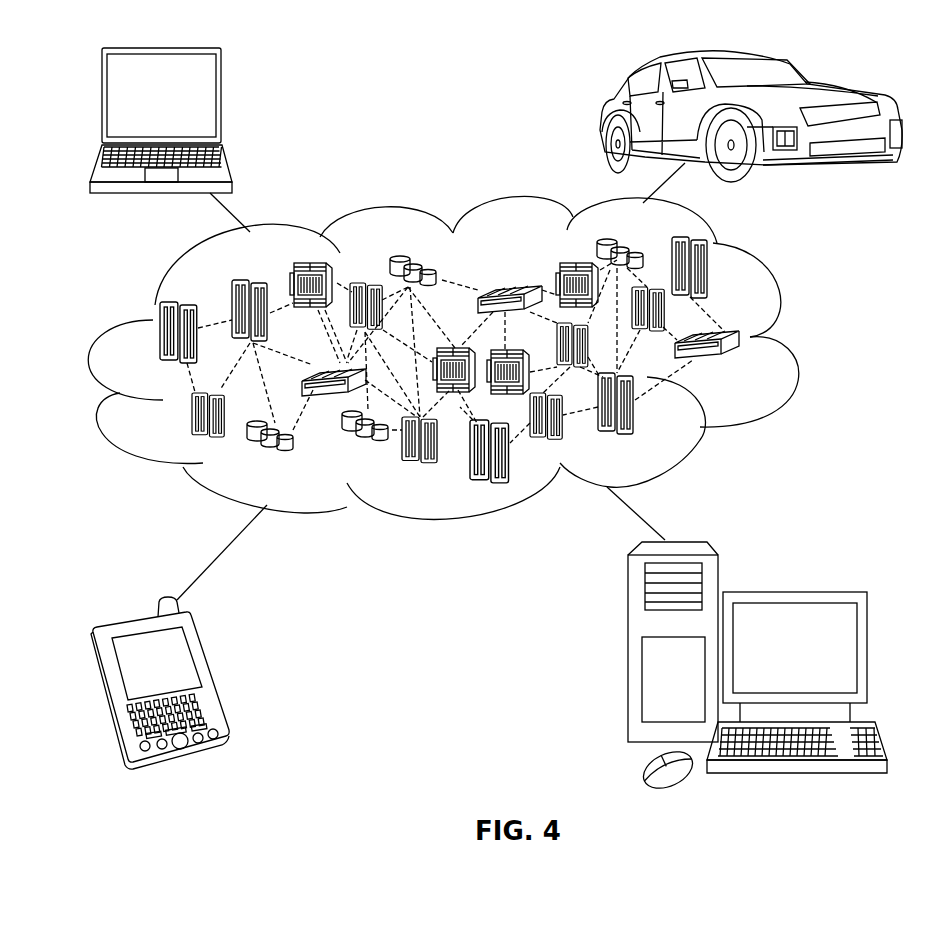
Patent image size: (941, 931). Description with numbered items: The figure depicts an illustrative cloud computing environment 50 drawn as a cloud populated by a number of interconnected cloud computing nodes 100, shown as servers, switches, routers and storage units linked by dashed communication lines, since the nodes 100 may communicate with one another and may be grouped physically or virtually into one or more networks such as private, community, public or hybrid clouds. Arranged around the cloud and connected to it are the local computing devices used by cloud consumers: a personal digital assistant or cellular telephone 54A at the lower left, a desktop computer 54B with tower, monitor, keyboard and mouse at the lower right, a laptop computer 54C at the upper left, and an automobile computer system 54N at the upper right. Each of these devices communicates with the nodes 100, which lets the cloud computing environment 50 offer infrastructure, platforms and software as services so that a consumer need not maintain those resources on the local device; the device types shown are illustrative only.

The laptop computer 54C is at (222, 103).
The automobile computer system 54N is at (604, 110).
The personal digital assistant (PDA) or cellular telephone 54A is at (212, 672).
The desktop computer 54B is at (792, 592).
The cloud computing environment 50 is at (793, 343).
The cloud computing nodes 100 is at (743, 367).